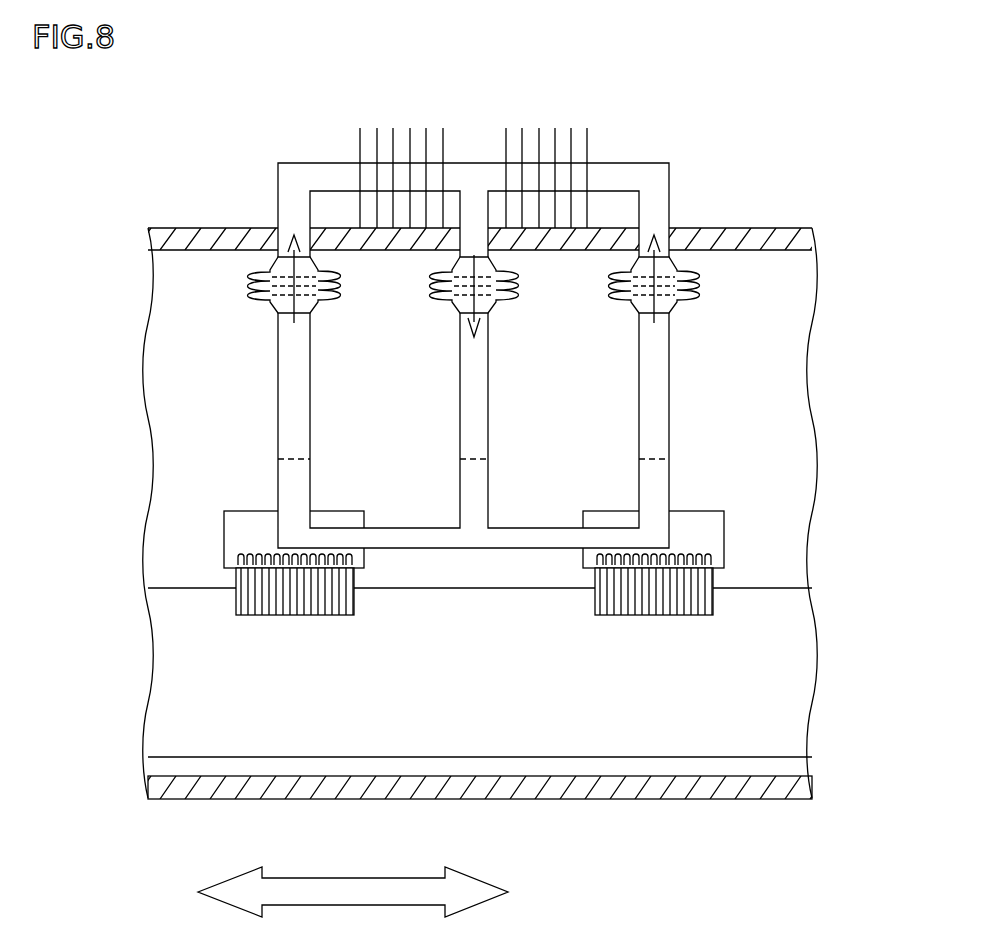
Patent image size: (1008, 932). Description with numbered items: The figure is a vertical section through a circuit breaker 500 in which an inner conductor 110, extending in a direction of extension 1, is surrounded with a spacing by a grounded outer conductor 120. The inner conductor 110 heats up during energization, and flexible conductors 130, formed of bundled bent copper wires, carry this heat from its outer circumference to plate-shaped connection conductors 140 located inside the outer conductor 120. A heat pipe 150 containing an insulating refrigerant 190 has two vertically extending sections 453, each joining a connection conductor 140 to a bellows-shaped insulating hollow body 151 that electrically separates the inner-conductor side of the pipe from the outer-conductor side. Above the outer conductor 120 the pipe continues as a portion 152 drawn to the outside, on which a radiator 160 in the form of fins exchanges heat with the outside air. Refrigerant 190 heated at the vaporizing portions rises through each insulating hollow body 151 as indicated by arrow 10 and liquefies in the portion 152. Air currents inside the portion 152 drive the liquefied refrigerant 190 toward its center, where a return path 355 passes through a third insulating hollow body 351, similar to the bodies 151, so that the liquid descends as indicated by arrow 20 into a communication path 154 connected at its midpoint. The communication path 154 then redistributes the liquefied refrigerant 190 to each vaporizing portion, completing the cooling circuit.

The circuit breaker 500 is at (831, 103).
The outer conductor 120 is at (194, 226).
The portion of heat pipe drawn to outside of outer conductor 152 is at (311, 158).
The radiator 160 is at (446, 126).
The heat pipe 150 is at (640, 161).
The insulating hollow body 151 is at (258, 283).
The arrow 10 is at (278, 318).
The arrow 20 is at (460, 308).
The insulating hollow body 351 is at (505, 297).
The section of heat pipe 453 is at (259, 405).
The return path 355 is at (508, 437).
The refrigerant 190 is at (655, 477).
The connection conductor 140 is at (724, 535).
The flexible conductor 130 is at (713, 600).
The inner conductor 110 is at (780, 680).
The communication path 154 is at (536, 548).
The direction of extension 1 is at (506, 884).